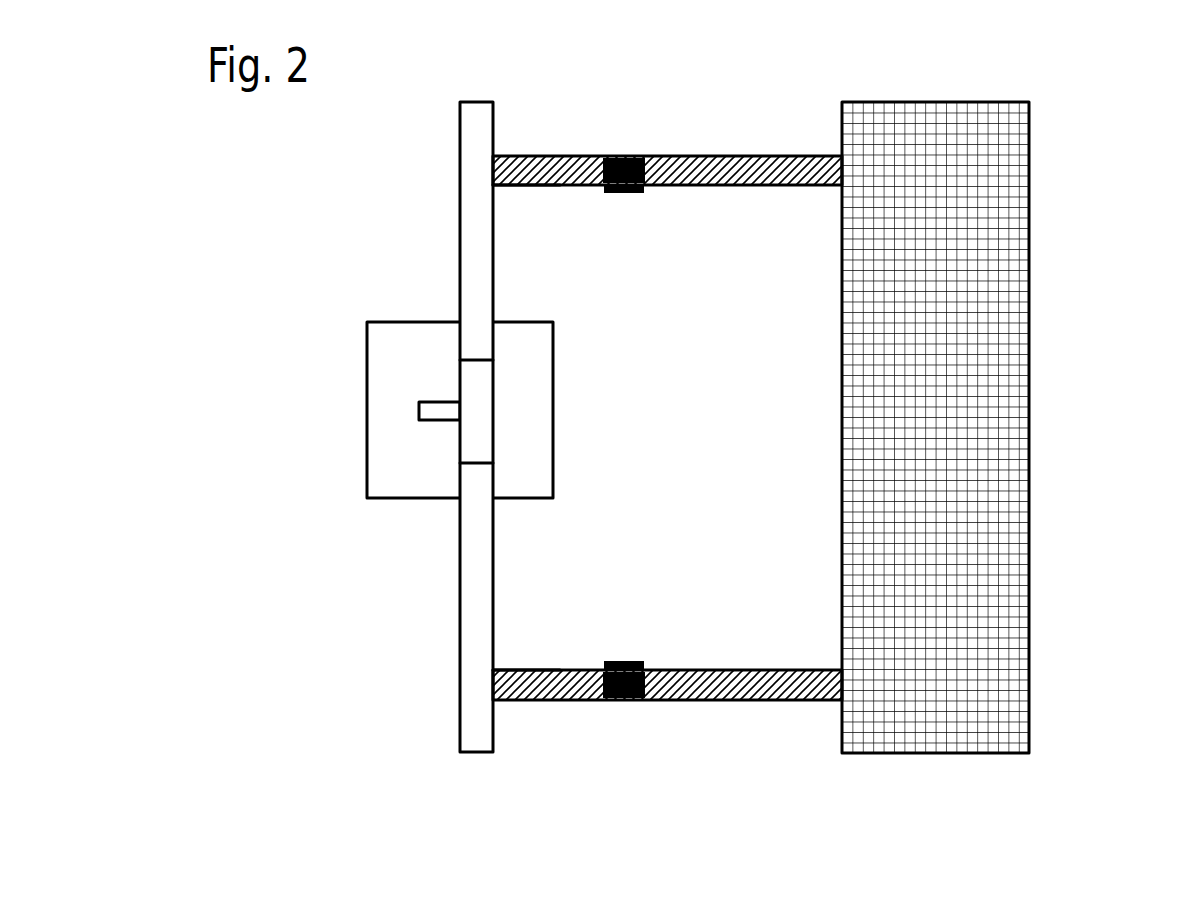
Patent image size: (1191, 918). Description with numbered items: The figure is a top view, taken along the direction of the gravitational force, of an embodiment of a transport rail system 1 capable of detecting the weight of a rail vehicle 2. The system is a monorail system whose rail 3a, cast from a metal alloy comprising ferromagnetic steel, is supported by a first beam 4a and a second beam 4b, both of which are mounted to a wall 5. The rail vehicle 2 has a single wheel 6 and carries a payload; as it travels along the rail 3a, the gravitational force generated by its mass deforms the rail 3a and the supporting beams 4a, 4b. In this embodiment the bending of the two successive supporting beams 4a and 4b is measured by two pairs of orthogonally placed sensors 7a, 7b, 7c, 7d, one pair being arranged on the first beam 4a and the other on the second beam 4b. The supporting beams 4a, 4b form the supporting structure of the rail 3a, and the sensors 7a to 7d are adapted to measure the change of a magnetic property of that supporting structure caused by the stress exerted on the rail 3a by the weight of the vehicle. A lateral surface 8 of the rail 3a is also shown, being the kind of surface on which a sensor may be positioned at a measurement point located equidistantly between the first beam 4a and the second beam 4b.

The transport rail system 1 is at (384, 745).
The rail vehicle 2 is at (392, 465).
The rail 3a is at (477, 132).
The first beam 4a is at (753, 165).
The second beam 4b is at (795, 690).
The wall 5 is at (1009, 720).
The wheel 6 is at (463, 368).
The first sensor 7a is at (637, 703).
The second sensor 7b is at (622, 660).
The sensor 7c is at (620, 193).
The sensor 7d is at (622, 157).
The lateral surface 8 is at (555, 186).